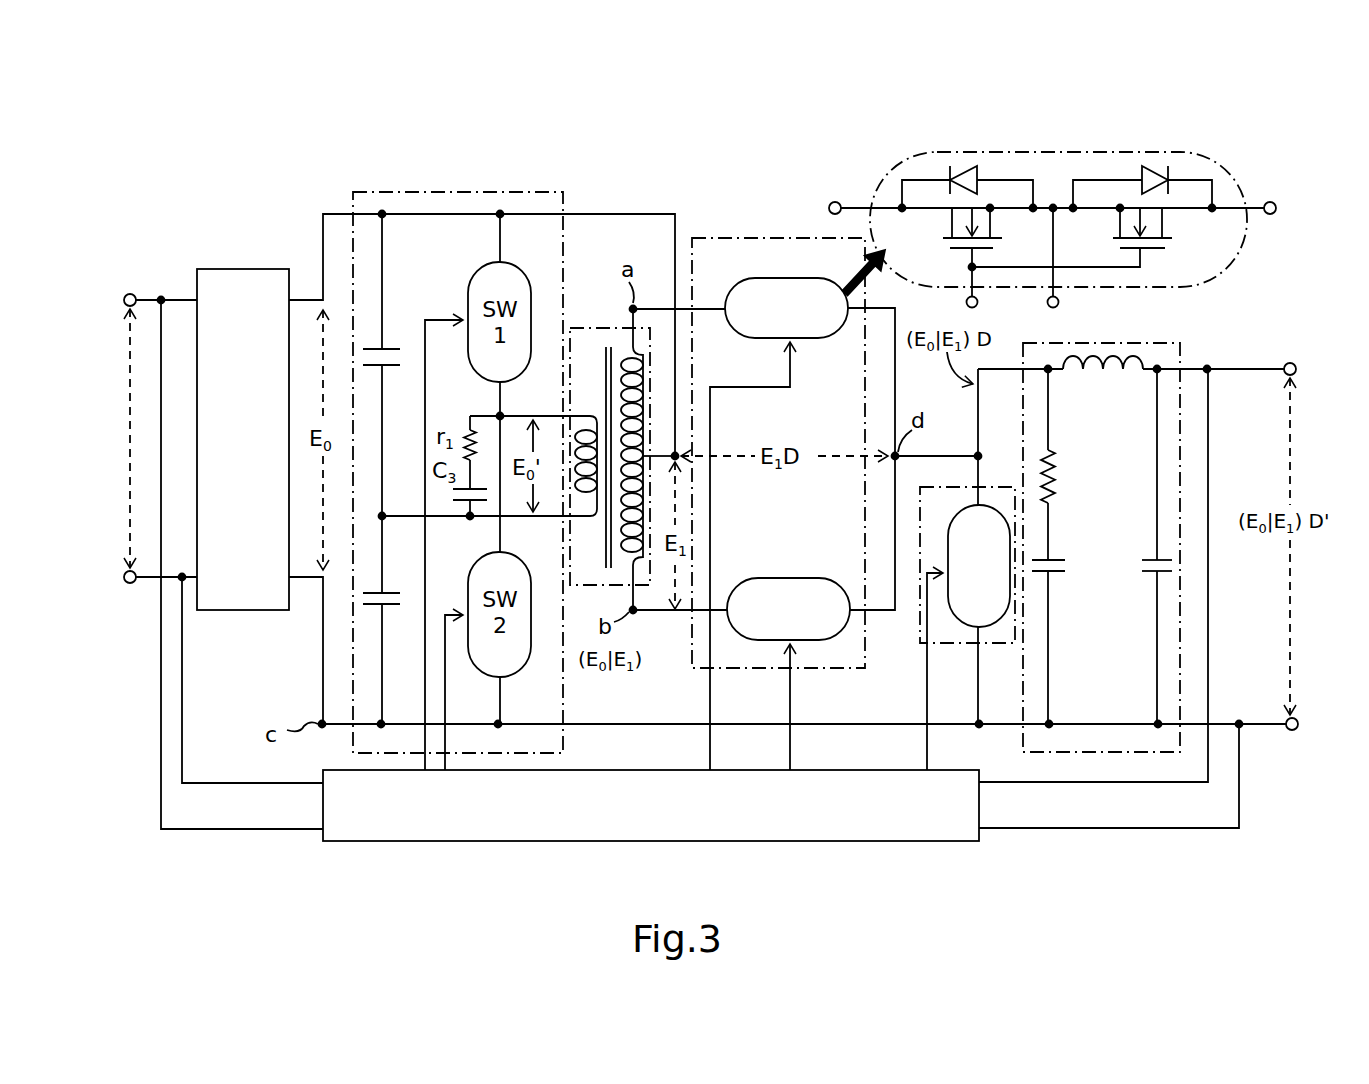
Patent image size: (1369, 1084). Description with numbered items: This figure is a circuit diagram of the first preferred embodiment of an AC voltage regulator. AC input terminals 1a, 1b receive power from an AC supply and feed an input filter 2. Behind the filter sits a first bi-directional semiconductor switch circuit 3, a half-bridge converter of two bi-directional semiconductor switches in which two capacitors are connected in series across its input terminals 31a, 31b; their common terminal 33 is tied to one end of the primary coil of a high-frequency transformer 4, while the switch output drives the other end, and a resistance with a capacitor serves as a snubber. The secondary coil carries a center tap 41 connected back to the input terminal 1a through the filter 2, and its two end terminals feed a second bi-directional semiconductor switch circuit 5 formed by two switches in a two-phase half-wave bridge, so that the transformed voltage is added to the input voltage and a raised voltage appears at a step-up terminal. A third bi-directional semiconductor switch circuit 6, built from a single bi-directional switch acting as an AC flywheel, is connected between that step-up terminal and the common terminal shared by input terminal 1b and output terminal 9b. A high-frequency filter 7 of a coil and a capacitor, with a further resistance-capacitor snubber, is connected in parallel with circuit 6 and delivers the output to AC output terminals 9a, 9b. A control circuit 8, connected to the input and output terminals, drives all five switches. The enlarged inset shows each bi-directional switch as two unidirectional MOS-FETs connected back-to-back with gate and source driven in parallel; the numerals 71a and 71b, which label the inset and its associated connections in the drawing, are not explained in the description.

The AC input terminal 1a is at (124, 300).
The AC input terminal 1b is at (124, 577).
The input filter 2 is at (240, 268).
The first bi-directional semiconductor switch circuit 3 is at (512, 194).
The input terminal 31a is at (410, 210).
The input terminal 31b is at (340, 720).
The common terminal 33 is at (485, 493).
The high-frequency transformer 4 is at (590, 345).
The center tap 41 is at (682, 454).
The second bi-directional semiconductor switch circuit 5 is at (718, 246).
The third bi-directional semiconductor switch circuit 6 is at (938, 642).
The high-frequency filter 7 is at (1147, 344).
The bidirectional switch (MOSFET pair) 71a is at (1052, 238).
The control connection lines 71b is at (1008, 730).
The control circuit 8 is at (662, 843).
The AC output terminal 9a is at (1298, 369).
The AC output terminal 9b is at (1300, 724).